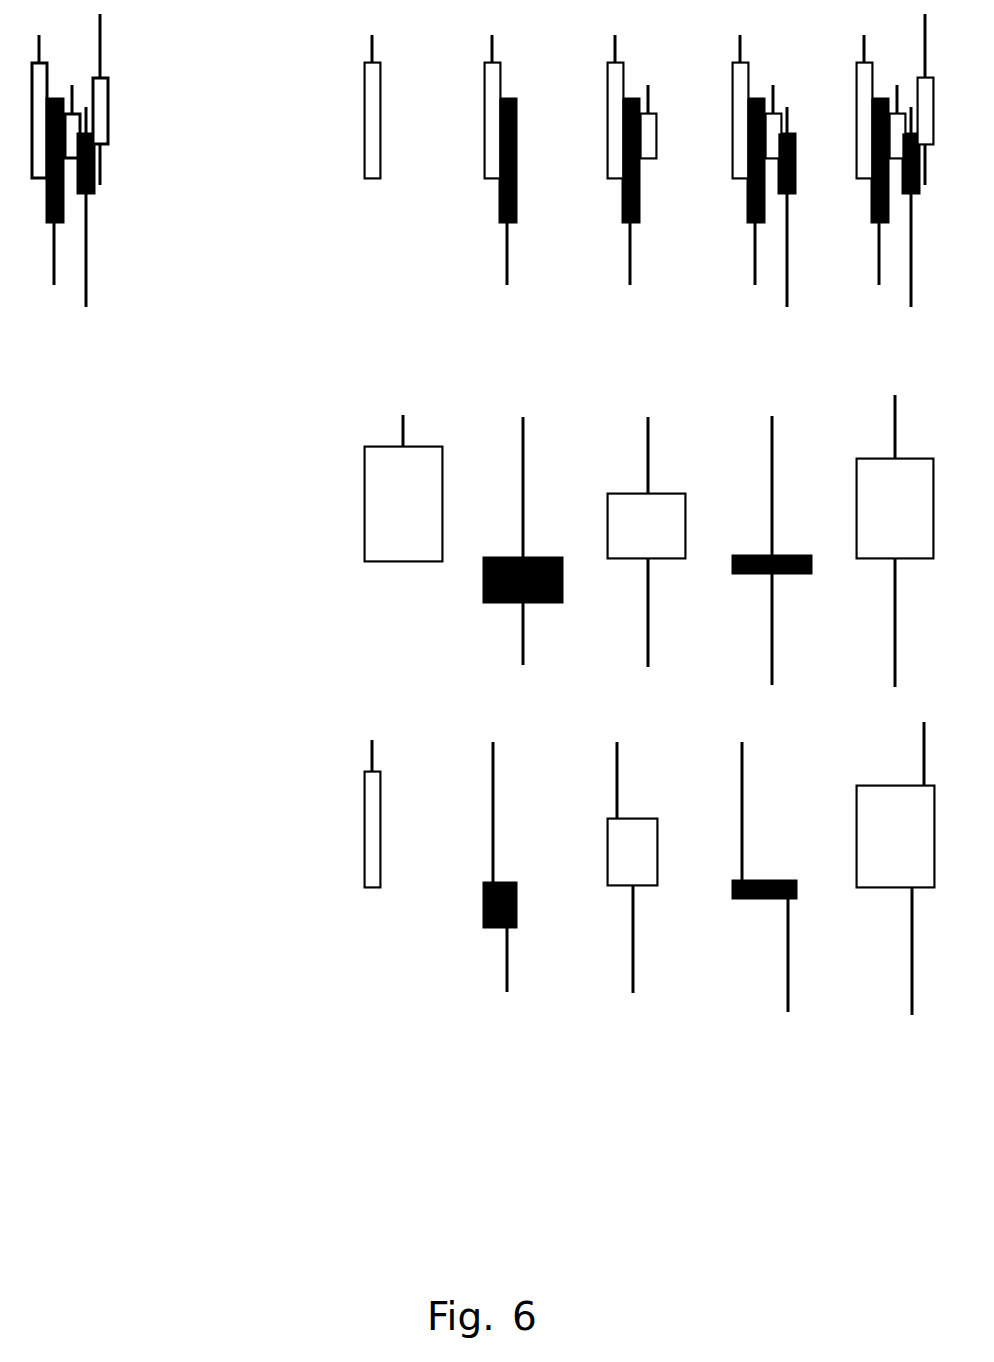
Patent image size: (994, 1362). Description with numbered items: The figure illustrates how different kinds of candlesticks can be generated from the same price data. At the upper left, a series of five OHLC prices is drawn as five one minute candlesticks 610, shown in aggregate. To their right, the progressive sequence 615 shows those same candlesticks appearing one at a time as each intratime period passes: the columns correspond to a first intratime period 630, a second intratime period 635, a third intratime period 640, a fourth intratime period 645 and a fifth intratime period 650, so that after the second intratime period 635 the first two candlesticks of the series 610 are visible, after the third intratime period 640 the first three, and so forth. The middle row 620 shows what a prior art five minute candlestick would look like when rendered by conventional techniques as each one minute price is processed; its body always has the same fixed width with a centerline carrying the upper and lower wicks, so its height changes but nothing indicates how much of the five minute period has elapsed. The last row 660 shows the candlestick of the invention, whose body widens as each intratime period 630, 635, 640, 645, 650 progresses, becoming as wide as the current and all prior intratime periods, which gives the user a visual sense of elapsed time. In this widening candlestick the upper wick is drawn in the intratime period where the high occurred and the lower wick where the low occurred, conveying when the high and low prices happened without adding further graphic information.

The series of five one minute candlesticks 610 is at (39, 333).
The progressive sequence of candlesticks 615 is at (300, 122).
The prior art five minute candlestick row 620 is at (300, 505).
The widening candlestick row 660 is at (300, 823).
The first intratime period 630 is at (375, 1055).
The second intratime period 635 is at (500, 1055).
The third intratime period 640 is at (627, 1055).
The fourth intratime period 645 is at (765, 1055).
The fifth intratime period 650 is at (893, 1055).